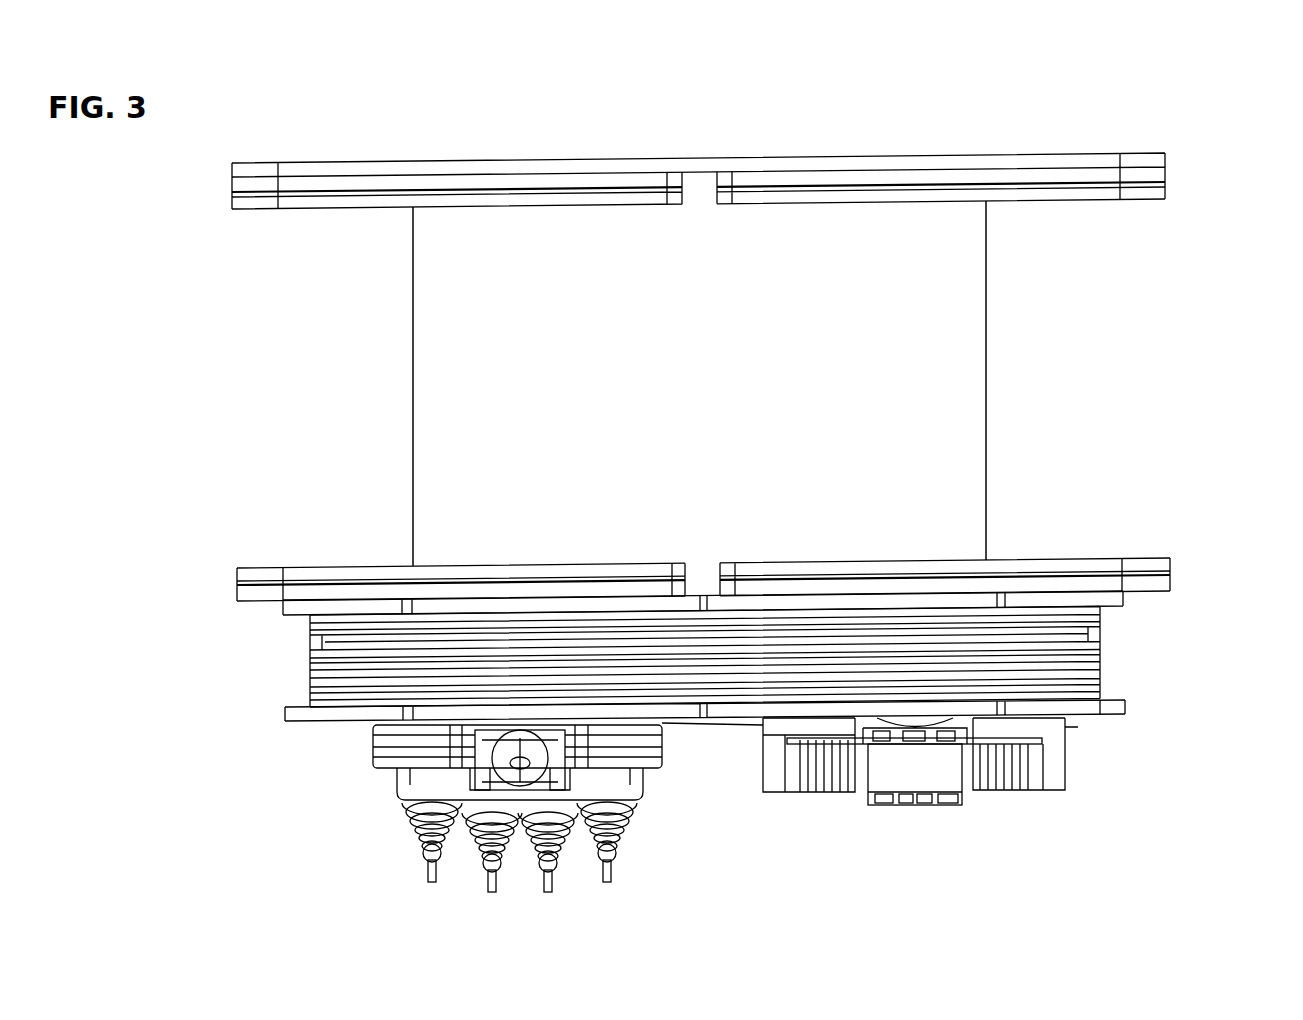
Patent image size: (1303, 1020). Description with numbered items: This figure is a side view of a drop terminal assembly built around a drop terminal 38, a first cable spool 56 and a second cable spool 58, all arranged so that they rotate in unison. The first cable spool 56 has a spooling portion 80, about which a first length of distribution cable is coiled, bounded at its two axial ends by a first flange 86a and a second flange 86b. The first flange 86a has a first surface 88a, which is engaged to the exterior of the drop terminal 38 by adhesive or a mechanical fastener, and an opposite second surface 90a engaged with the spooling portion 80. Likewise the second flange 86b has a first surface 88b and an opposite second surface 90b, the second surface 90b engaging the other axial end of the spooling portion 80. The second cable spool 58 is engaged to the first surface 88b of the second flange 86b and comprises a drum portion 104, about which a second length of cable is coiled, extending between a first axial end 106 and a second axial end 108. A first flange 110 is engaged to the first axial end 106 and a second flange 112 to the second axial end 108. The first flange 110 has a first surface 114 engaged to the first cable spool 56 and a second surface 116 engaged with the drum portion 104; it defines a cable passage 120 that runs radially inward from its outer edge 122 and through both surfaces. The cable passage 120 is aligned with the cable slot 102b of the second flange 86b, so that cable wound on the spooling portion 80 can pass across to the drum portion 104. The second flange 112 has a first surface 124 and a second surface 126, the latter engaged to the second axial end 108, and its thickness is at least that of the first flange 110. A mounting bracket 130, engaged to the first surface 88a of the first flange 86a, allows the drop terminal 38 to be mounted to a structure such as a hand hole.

The drop terminal 38 is at (656, 803).
The first cable spool 56 is at (301, 727).
The second cable spool 58 is at (1152, 322).
The spooling portion 80 is at (1120, 656).
The first flange 86a is at (273, 712).
The second flange 86b is at (280, 611).
The first surface 88a is at (1118, 714).
The first surface 88b is at (1080, 590).
The second surface 90a is at (1117, 698).
The second surface 90b is at (1112, 607).
The cable slot 102b is at (707, 603).
The drum portion 104 is at (990, 384).
The first axial end 106 is at (990, 510).
The second axial end 108 is at (987, 223).
The first flange 110 is at (1180, 562).
The second flange 112 is at (1167, 211).
The first surface 114 is at (1155, 590).
The second surface 116 is at (265, 568).
The cable passage 120 is at (686, 567).
The outer edge 122 is at (236, 575).
The first surface 124 is at (323, 208).
The second surface 126 is at (311, 162).
The mounting bracket 130 is at (948, 805).